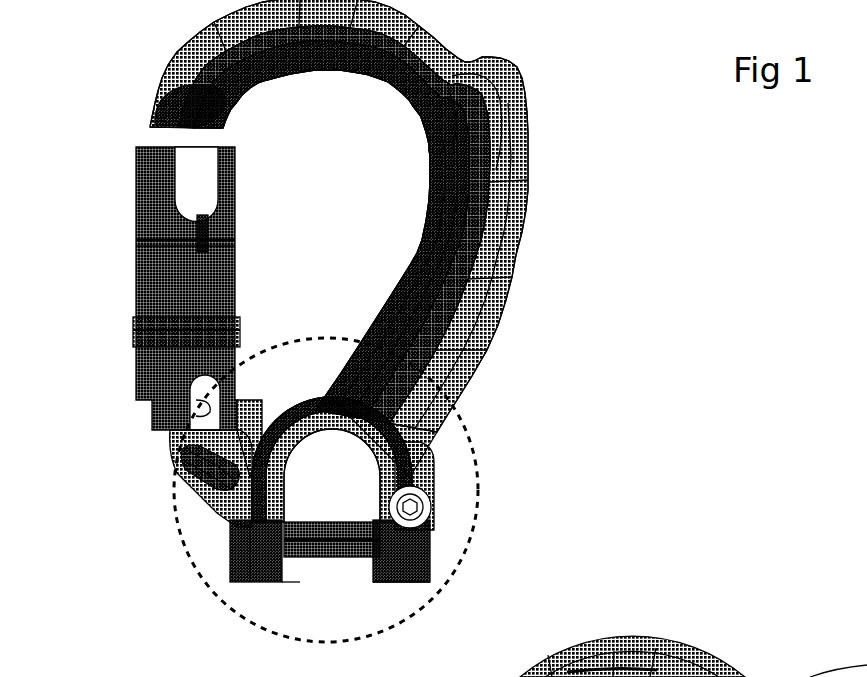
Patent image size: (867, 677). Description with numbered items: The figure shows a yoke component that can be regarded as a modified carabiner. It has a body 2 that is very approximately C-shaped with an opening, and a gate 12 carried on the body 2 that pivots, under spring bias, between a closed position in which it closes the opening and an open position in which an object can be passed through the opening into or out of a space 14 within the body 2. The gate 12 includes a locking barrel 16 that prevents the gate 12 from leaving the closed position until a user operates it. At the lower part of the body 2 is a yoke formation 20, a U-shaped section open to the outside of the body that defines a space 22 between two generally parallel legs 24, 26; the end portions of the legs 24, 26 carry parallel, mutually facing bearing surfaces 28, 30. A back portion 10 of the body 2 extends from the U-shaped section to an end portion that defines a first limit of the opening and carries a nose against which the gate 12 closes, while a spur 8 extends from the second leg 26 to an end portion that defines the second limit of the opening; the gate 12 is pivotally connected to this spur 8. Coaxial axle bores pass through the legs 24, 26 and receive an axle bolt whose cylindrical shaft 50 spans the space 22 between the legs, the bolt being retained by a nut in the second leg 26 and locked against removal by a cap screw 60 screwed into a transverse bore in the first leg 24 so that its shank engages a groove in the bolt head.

The body 2 is at (538, 307).
The spur 8 is at (168, 478).
The back portion 10 is at (515, 243).
The gate 12 is at (100, 187).
The space 14 is at (338, 257).
The locking barrel 16 is at (133, 310).
The yoke formation 20 is at (453, 420).
The space 22 is at (345, 495).
The first leg 24 is at (420, 452).
The second leg 26 is at (230, 572).
The bearing surface 28 is at (303, 576).
The bearing surface 30 is at (355, 578).
The cylindrical shaft 50 is at (425, 478).
The cap screw 60 is at (432, 555).